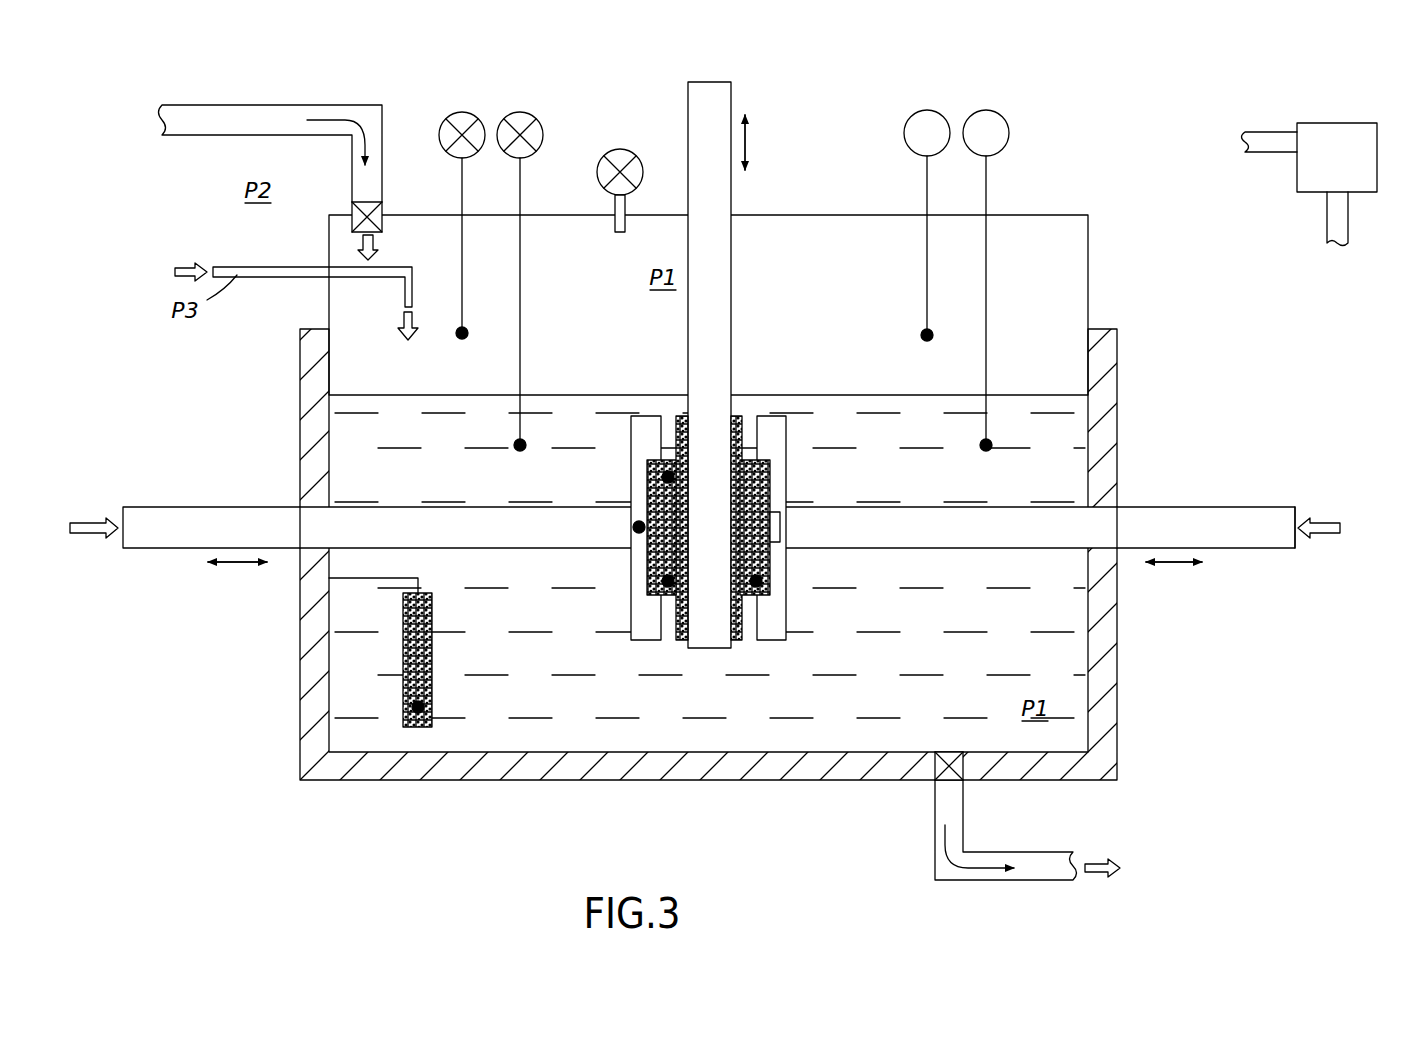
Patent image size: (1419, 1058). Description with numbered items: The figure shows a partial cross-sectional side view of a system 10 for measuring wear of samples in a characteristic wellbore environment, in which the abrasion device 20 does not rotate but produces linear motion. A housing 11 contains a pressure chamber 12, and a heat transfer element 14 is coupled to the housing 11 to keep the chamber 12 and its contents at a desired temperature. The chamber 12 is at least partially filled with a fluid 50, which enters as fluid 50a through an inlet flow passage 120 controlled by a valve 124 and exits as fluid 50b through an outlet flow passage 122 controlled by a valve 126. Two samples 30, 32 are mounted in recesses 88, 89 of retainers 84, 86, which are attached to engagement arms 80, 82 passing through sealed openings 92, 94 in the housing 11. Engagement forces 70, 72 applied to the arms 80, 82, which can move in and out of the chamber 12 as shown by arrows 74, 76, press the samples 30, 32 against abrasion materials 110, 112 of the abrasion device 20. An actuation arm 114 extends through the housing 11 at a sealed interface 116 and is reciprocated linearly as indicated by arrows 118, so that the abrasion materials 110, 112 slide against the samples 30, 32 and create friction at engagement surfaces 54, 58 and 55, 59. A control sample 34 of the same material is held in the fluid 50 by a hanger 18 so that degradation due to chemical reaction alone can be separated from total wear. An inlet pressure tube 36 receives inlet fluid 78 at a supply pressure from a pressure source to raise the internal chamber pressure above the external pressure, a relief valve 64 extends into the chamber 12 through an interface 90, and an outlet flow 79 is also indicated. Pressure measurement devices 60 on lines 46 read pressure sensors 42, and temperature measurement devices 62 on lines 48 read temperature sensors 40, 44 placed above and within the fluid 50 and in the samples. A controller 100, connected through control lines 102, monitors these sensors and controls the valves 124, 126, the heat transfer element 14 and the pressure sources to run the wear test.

The system 10 is at (1330, 233).
The housing 11 is at (1088, 257).
The pressure chamber 12 is at (845, 255).
The heat transfer element 14 is at (315, 347).
The sample hanger 18 is at (345, 580).
The abrasion device 20 is at (812, 383).
The sample 30 is at (662, 477).
The sample 32 is at (762, 470).
The control sample 34 is at (435, 698).
The inlet pressure tube 36 is at (228, 267).
The temperature sensors 40 is at (921, 335).
The pressure sensors 42 is at (780, 528).
The temperature sensor 44 is at (412, 707).
The pressure gauge line 46 is at (520, 252).
The temperature gauge line 48 is at (986, 240).
The fluid 50 is at (960, 673).
The fluid 50a is at (340, 118).
The fluid 50b is at (975, 870).
The engagement surface 54 is at (673, 487).
The engagement surface 55 is at (678, 552).
The engagement surface 58 is at (740, 478).
The engagement surface 59 is at (747, 515).
The pressure measurement devices 60 is at (520, 112).
The temperature measurement devices 62 is at (943, 113).
The relief valve 64 is at (620, 149).
The engagement force 70 is at (83, 540).
The engagement force 72 is at (1330, 540).
The arrow 74 is at (240, 567).
The arrow 76 is at (1177, 565).
The inlet fluid 78 is at (183, 267).
The outlet flow 79 is at (405, 327).
The engagement arm 80 is at (428, 522).
The engagement arm 82 is at (1258, 507).
The retainer 84 is at (643, 637).
The retainer 86 is at (776, 608).
The recess 88 is at (665, 460).
The recess 89 is at (758, 462).
The interface 90 is at (627, 212).
The opening 92 is at (300, 506).
The opening 94 is at (1117, 505).
The controller 100 is at (1320, 171).
The control lines 102 is at (1280, 150).
The abrasion material 110 is at (682, 414).
The abrasion material 112 is at (740, 415).
The actuation arm 114 is at (718, 252).
The interface 116 is at (737, 213).
The arrows 118 is at (753, 142).
The inlet flow passage 120 is at (268, 105).
The outlet flow passage 122 is at (1022, 882).
The valve 124 is at (382, 215).
The valve 126 is at (965, 768).